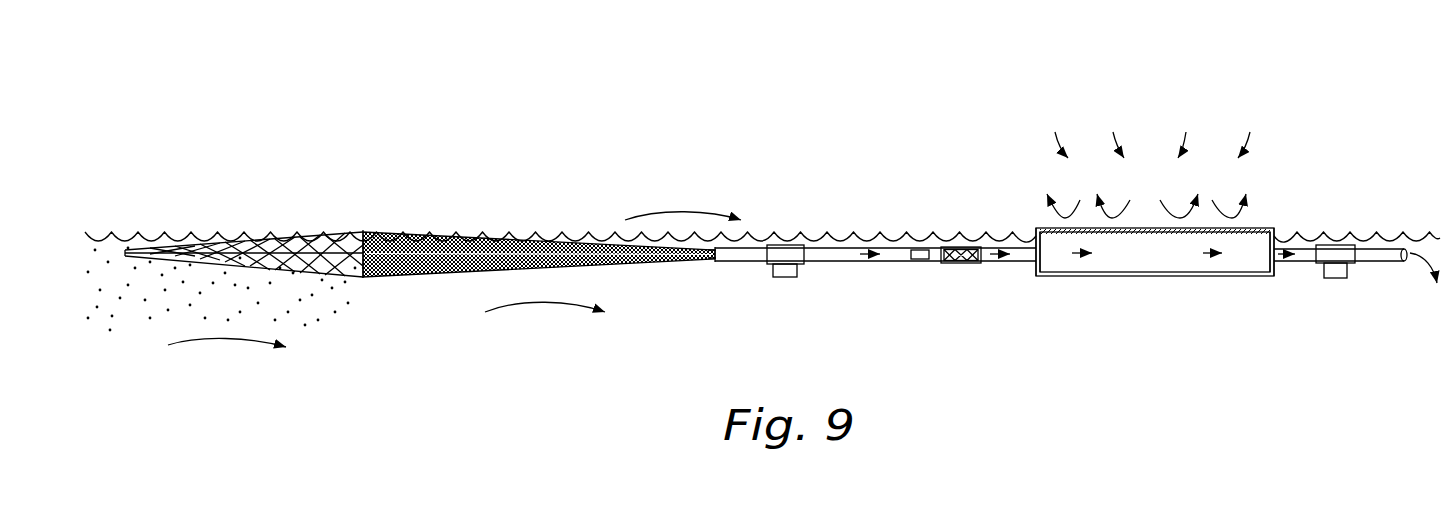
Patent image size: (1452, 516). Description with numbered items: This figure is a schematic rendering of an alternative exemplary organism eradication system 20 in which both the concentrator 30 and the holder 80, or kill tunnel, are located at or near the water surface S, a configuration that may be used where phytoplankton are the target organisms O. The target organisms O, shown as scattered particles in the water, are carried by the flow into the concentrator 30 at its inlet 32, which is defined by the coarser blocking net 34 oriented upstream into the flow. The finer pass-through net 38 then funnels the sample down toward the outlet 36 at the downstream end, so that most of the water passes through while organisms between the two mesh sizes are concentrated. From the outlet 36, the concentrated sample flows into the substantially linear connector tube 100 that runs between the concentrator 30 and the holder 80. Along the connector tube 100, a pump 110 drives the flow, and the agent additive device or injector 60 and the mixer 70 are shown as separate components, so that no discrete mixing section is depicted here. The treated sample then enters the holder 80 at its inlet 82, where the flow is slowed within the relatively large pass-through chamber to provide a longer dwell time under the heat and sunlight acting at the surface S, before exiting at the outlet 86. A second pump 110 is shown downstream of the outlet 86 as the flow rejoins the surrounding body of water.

The organism eradication system 20 is at (481, 104).
The concentrator 30 is at (420, 246).
The inlet 32 is at (297, 213).
The blocking net 34 is at (300, 273).
The outlet 36 is at (711, 270).
The pass-through net 38 is at (428, 278).
The injector 60 is at (917, 260).
The mixer 70 is at (964, 263).
The holder 80 is at (1151, 131).
The inlet 82 is at (1024, 272).
The outlet 86 is at (1283, 276).
The connector tube 100 is at (853, 262).
The pump 110 is at (785, 277).
The water surface S is at (160, 240).
The target organisms O is at (150, 295).